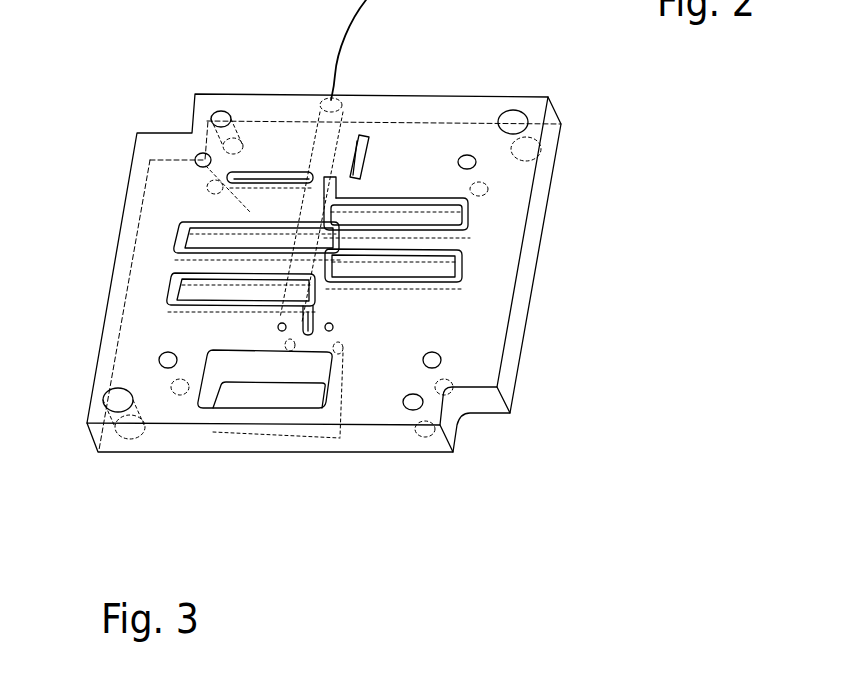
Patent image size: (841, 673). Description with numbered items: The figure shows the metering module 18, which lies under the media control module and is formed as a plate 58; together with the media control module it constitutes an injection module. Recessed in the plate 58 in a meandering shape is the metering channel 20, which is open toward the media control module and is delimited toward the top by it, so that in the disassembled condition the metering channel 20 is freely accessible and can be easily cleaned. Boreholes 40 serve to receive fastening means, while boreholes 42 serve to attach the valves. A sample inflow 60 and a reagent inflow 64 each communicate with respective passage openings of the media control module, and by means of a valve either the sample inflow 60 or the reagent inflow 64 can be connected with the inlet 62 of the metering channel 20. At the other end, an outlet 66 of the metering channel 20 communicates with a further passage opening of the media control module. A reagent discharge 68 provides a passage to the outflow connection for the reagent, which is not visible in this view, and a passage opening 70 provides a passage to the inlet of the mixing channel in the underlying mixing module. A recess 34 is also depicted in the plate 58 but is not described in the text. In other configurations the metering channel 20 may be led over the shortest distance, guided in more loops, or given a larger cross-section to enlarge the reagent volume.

The metering module 18 is at (583, 259).
The metering channel 20 is at (470, 216).
The recess 34 is at (281, 396).
The boreholes 40 is at (219, 113).
The boreholes 42 is at (204, 156).
The plate 58 is at (172, 217).
The sample inflow 60 is at (278, 177).
The inlet 62 is at (333, 178).
The reagent inflow 64 is at (364, 136).
The outlet 66 is at (308, 334).
The reagent discharge 68 is at (279, 327).
The passage opening 70 is at (334, 327).